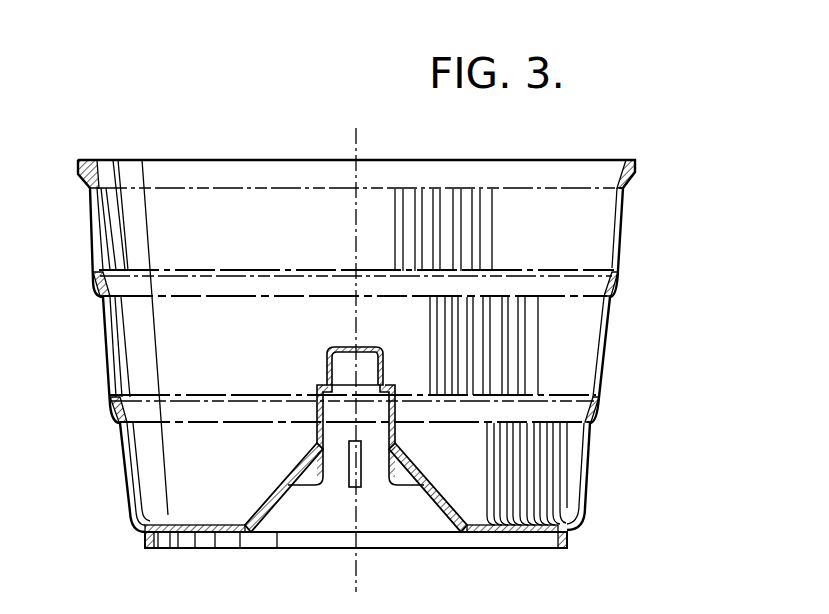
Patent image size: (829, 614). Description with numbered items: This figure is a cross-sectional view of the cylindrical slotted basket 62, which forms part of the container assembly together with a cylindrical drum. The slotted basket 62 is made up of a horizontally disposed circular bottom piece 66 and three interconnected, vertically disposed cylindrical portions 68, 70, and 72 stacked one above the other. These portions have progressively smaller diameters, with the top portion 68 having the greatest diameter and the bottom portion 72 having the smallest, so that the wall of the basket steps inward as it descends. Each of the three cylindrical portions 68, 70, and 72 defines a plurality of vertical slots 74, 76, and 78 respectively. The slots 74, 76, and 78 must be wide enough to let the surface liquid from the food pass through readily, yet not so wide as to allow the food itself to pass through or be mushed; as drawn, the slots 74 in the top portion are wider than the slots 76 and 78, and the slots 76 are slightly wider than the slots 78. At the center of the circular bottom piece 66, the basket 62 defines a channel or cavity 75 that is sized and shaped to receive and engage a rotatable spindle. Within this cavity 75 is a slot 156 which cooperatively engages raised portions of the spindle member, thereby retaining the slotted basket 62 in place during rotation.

The cylindrical slotted basket 62 is at (638, 250).
The circular bottom piece 66 is at (547, 542).
The top cylindrical portion 68 is at (92, 222).
The intermediate cylindrical portion 70 is at (108, 338).
The bottom cylindrical portion 72 is at (120, 450).
The vertical slots 74 is at (467, 196).
The channel 75 is at (400, 520).
The vertical slots 76 is at (500, 352).
The vertical slots 78 is at (568, 470).
The slot 156 is at (350, 488).